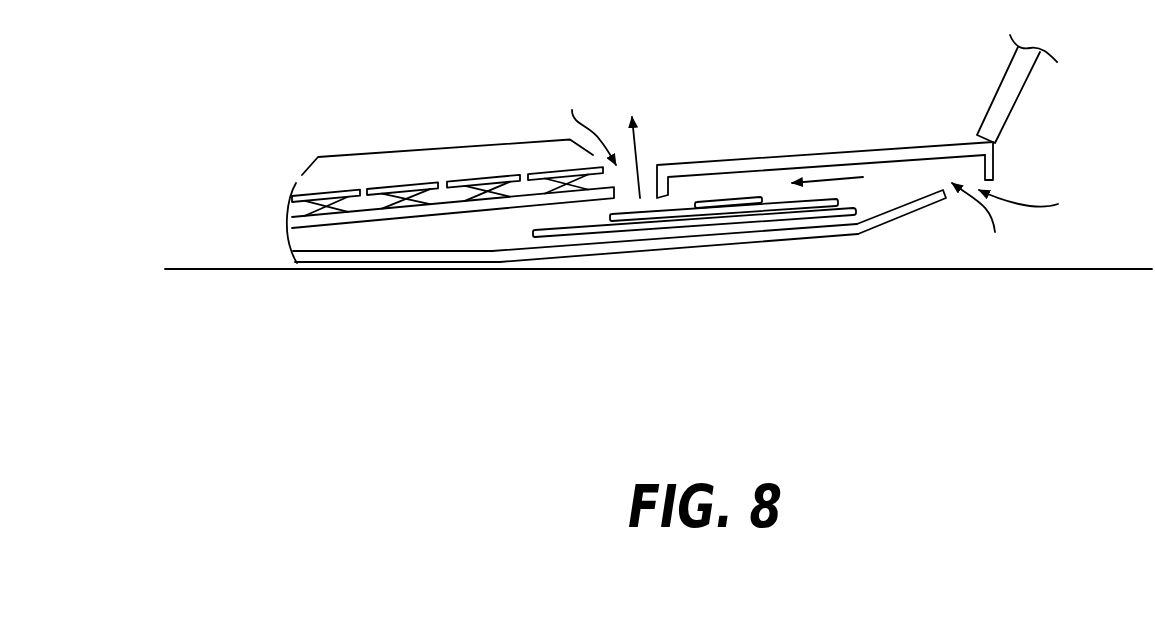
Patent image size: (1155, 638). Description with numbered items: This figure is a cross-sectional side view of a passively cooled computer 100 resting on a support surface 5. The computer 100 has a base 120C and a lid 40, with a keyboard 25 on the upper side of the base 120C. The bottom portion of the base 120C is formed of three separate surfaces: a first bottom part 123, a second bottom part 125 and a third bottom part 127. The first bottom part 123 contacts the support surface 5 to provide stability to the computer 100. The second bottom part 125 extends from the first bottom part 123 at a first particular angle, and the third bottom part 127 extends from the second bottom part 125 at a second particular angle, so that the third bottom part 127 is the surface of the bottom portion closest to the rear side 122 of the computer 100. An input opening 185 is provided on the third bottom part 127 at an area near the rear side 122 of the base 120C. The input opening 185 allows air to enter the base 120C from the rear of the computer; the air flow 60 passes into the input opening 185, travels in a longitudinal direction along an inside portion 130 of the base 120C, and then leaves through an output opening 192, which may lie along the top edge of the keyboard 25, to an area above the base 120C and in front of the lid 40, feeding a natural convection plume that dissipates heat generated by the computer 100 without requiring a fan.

The support surface 5 is at (197, 270).
The computer 100 is at (450, 147).
The keyboard 25 is at (440, 148).
The first bottom part 123 is at (413, 263).
The second bottom part 125 is at (697, 247).
The third bottom part 127 is at (889, 222).
The base 120C is at (728, 160).
The rear side 122 is at (997, 155).
The lid 40 is at (1030, 83).
The inside portion 130 is at (722, 185).
The output opening 192 is at (585, 123).
The air flow 60 is at (986, 222).
The input opening 185 is at (1047, 209).